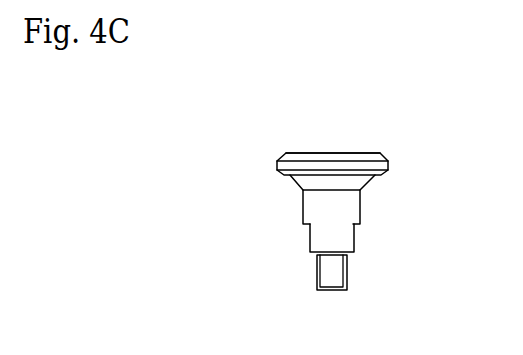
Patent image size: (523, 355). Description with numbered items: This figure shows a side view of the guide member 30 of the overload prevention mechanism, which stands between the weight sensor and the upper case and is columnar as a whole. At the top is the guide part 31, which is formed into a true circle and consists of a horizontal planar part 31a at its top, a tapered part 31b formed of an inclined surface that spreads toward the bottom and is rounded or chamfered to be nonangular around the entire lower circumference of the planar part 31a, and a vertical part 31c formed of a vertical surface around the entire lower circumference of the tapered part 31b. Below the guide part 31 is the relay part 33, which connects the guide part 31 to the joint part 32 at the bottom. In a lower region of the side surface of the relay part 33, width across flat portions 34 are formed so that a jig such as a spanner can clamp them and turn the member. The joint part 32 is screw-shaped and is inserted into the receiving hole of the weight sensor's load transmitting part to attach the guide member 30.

The guide member 30 is at (330, 199).
The guide part 31 is at (330, 153).
The planar part 31a is at (328, 153).
The tapered part 31b is at (277, 160).
The vertical part 31c is at (276, 168).
The joint part 32 is at (328, 273).
The relay part 33 is at (313, 205).
The width across flat portions 34 is at (307, 238).